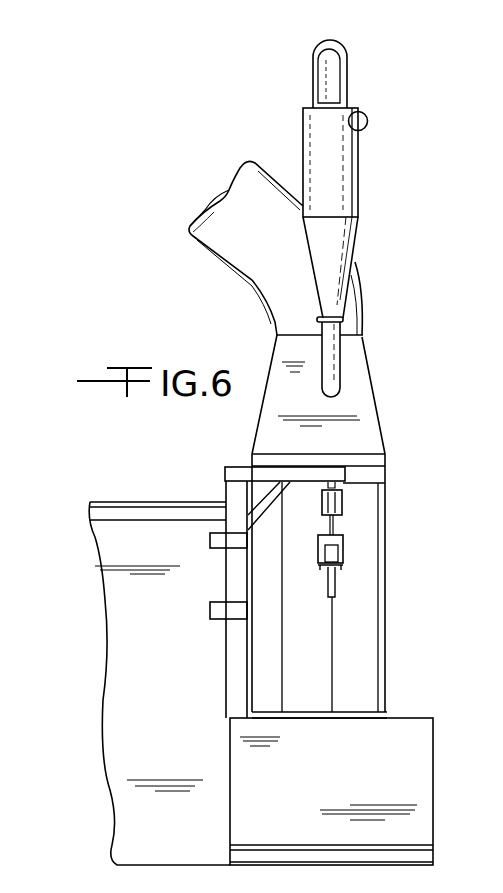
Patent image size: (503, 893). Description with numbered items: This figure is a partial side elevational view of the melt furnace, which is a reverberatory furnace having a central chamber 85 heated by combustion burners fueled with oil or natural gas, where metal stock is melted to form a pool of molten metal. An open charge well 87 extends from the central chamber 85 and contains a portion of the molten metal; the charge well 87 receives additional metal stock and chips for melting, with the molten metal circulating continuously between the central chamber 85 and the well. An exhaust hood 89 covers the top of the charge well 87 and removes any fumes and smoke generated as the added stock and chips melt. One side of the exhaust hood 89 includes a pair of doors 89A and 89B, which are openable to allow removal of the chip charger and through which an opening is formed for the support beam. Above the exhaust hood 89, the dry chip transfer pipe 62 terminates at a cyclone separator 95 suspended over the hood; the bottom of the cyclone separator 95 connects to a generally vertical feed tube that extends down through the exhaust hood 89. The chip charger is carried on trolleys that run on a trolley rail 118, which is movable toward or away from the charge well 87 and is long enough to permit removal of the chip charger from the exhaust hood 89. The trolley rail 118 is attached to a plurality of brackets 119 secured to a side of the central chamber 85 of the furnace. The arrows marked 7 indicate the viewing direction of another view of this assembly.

The section line 7- 7 is at (302, 32).
The dry chip transfer pipe 62 is at (368, 117).
The cyclone separator 95 is at (360, 188).
The exhaust hood 89 is at (357, 370).
The brackets 119 is at (233, 490).
The trolley rail 118 is at (343, 483).
The central chamber 85 is at (178, 731).
The charge well 87 is at (352, 786).
The exhaust hood door 89A is at (326, 645).
The exhaust hood door 89B is at (378, 678).